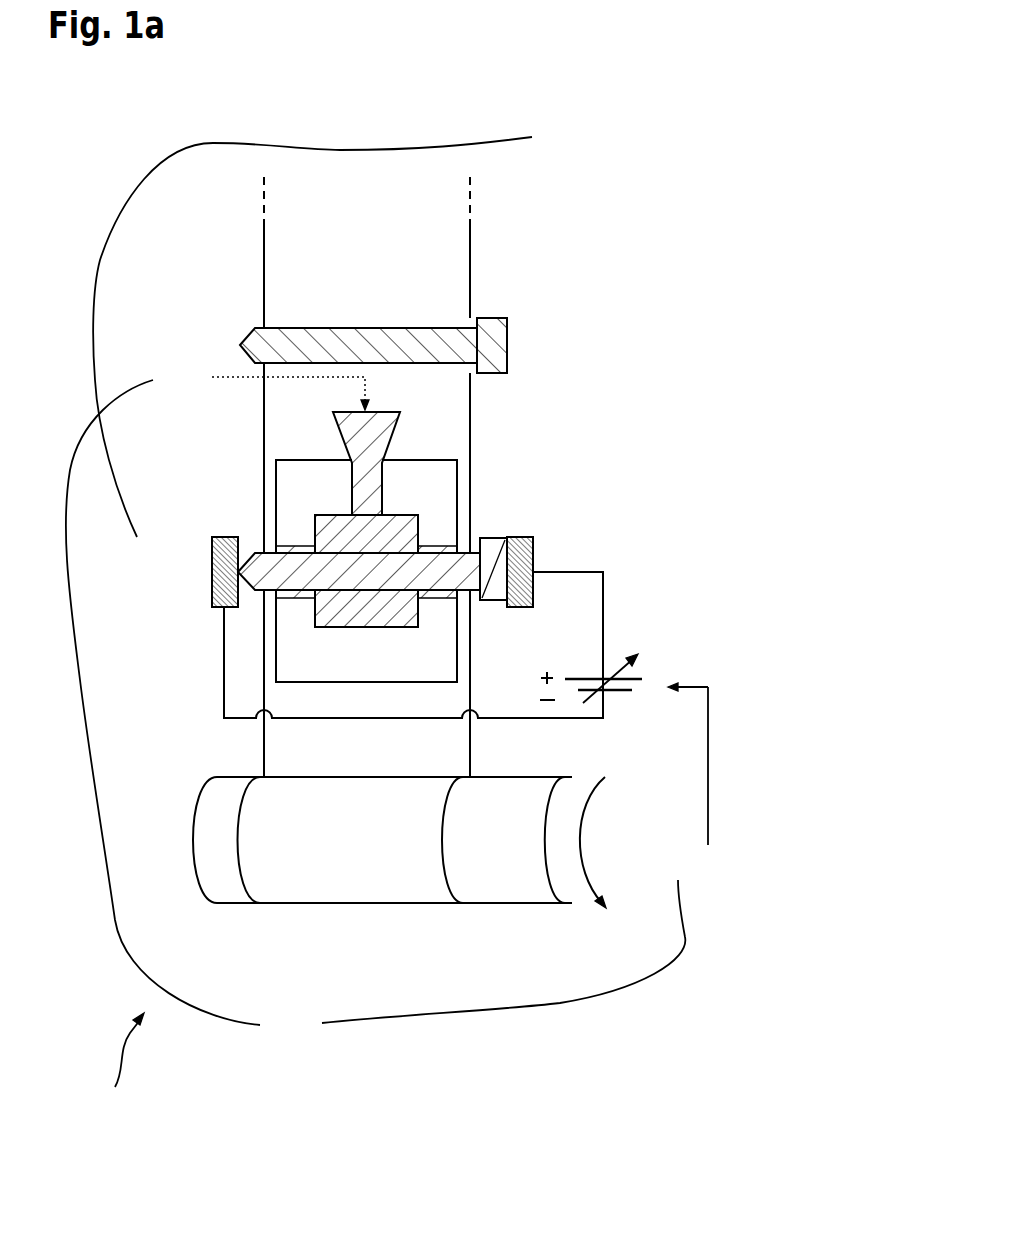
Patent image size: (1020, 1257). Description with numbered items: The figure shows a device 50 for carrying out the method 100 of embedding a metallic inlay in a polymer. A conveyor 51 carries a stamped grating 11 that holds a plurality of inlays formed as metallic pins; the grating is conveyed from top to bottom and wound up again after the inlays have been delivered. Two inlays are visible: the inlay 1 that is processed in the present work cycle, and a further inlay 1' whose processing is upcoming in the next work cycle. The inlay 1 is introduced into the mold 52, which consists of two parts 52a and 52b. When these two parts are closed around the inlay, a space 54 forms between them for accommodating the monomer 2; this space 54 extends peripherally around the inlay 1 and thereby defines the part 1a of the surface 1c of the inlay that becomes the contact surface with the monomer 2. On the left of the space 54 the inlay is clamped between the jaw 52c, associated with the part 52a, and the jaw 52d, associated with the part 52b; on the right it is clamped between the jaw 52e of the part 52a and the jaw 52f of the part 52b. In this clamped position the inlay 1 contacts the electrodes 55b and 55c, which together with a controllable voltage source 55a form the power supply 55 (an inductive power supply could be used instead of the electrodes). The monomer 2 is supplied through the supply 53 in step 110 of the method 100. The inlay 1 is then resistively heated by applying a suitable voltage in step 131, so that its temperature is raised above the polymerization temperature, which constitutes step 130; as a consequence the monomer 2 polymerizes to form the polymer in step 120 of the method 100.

The method 100 is at (375, 711).
The device 50 is at (113, 1062).
The stamped grating 11 is at (263, 252).
The conveyor 51 is at (525, 905).
The monomer 2 is at (223, 372).
The further inlay 1' is at (527, 345).
The step of supplying the monomer 110 is at (268, 386).
The mold 52 is at (603, 613).
The part of the mold 52a is at (627, 472).
The supply 53 is at (360, 423).
The space 54 is at (338, 627).
The part of the surface of the inlay 1a is at (400, 512).
The jaw 52f is at (405, 633).
The surface of the inlay 1c is at (257, 547).
The inlay 1 is at (493, 536).
The jaw 52c is at (293, 546).
The jaw 52e is at (442, 546).
The jaw 52d is at (290, 598).
The part of the mold 52b is at (442, 598).
The electrode 55c is at (210, 571).
The electrode 55b is at (540, 552).
The power supply 55 is at (735, 630).
The controllable voltage source 55a is at (638, 678).
The step of applying a voltage 131 is at (685, 778).
The step of heating the inlay 130 is at (741, 852).
The step of polymerizing 120 is at (765, 857).